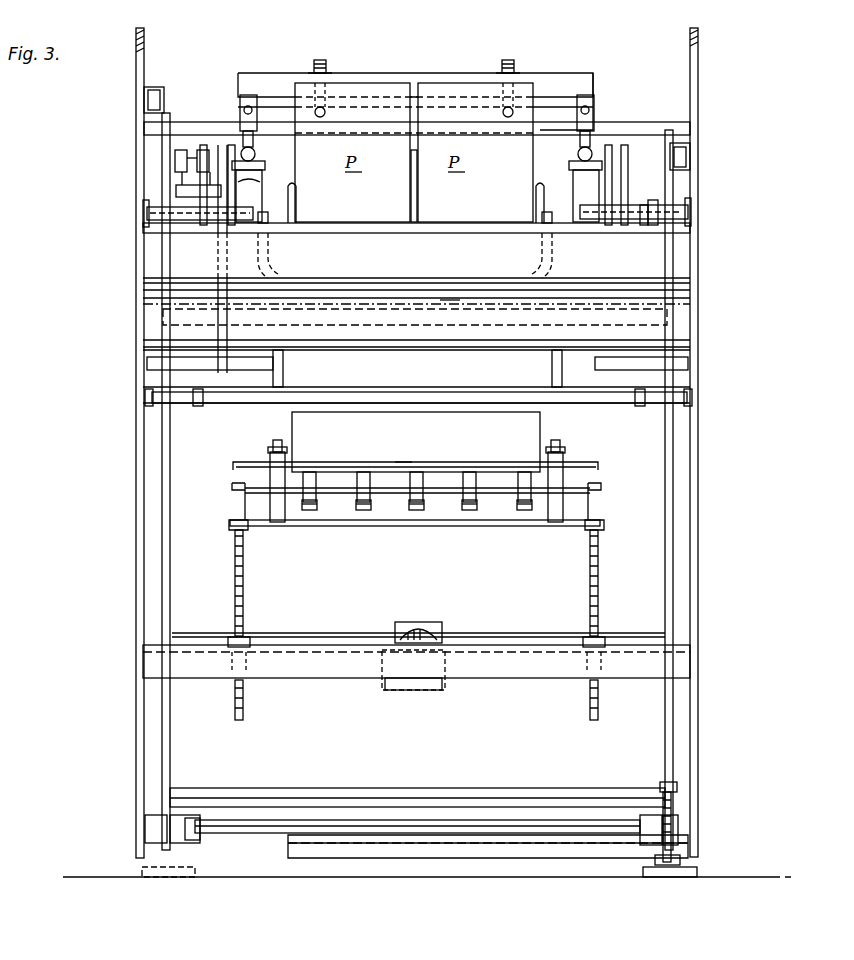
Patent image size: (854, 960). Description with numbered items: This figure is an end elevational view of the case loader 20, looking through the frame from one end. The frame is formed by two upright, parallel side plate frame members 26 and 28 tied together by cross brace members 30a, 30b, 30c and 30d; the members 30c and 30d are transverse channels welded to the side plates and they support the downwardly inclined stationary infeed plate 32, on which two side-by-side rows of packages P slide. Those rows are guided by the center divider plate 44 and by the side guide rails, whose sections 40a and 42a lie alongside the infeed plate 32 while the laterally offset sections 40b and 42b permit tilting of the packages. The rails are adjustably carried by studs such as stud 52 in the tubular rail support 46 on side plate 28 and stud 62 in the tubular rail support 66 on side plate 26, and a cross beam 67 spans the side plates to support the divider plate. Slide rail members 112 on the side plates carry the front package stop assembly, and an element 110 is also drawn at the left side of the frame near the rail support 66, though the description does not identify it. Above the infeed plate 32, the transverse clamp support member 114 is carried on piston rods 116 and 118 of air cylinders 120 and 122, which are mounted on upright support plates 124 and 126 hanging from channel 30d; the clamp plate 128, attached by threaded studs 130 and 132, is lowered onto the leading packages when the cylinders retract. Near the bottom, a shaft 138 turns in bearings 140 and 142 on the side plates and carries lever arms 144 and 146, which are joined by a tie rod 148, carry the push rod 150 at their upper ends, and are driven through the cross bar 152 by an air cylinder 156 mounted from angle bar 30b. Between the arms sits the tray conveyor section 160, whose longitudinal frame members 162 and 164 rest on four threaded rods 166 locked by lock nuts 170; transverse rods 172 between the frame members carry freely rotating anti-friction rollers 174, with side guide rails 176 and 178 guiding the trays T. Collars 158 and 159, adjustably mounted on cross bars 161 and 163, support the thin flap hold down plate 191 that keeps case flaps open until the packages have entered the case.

The case loader 20 is at (112, 445).
The side plate frame member 26 is at (140, 315).
The side plate frame member 28 is at (700, 308).
The cross brace member 30a is at (556, 855).
The transverse angle bar 30b is at (500, 668).
The transverse channel 30c is at (678, 252).
The transverse channel 30d is at (648, 328).
The infeed plate 32 is at (468, 212).
The guide rail section 40a is at (297, 201).
The guide rail section 40b is at (283, 372).
The guide rail section 42a is at (536, 200).
The guide rail section 42b is at (552, 372).
The center divider plate 44 is at (418, 172).
The tubular rail support 46 is at (690, 212).
The stud 52 is at (560, 226).
The stud 62 is at (277, 222).
The tubular rail support 66 is at (150, 215).
The cross beam 67 is at (643, 130).
The drive mechanism 110 is at (185, 193).
The slide rail member 112 is at (148, 113).
The clamp support member 114 is at (548, 72).
The piston rod 116 is at (240, 135).
The piston rod 118 is at (595, 140).
The air cylinder 120 is at (257, 190).
The air cylinder 122 is at (592, 190).
The upright support plate 124 is at (222, 200).
The upright support plate 126 is at (615, 200).
The clamp plate 128 is at (570, 75).
The threaded stud 130 is at (320, 64).
The threaded stud 132 is at (508, 62).
The shaft 138 is at (345, 820).
The bearing 140 is at (150, 828).
The bearing 142 is at (688, 818).
The lever arm 144 is at (168, 593).
The lever arm 146 is at (670, 590).
The tie rod 148 is at (259, 787).
The push rod 150 is at (448, 305).
The cross bar 152 is at (208, 632).
The air cylinder 156 is at (420, 628).
The collar 158 is at (205, 404).
The collar 159 is at (640, 404).
The tray conveyor section 160 is at (447, 505).
The cross bar 161 is at (405, 405).
The cross bar 163 is at (416, 384).
The longitudinal frame member 162 is at (243, 503).
The longitudinal frame member 164 is at (600, 506).
The threaded rod 166 is at (233, 548).
The lock nut 170 is at (606, 636).
The transverse rod 172 is at (390, 492).
The anti-friction roller 174 is at (363, 510).
The side guide rail 176 is at (290, 462).
The side guide rail 178 is at (548, 462).
The flap hold down plate 191 is at (407, 405).